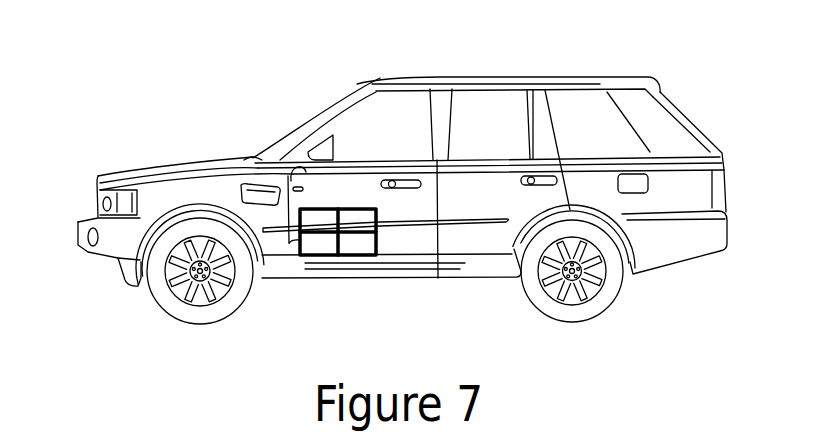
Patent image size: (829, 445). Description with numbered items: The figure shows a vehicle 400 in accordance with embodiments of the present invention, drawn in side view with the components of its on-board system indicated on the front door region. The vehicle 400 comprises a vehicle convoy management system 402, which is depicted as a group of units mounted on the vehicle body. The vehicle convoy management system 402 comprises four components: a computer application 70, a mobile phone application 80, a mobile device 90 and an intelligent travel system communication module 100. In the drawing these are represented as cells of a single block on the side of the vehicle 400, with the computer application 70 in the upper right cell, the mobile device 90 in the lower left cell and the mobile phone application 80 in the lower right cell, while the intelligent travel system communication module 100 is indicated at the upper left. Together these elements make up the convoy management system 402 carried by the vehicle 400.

The vehicle 400 is at (237, 128).
The intelligent travel system communication module 100 is at (343, 182).
The computer application 70 is at (357, 219).
The mobile phone application 80 is at (357, 248).
The mobile device 90 is at (320, 248).
The vehicle convoy management system 402 is at (300, 242).